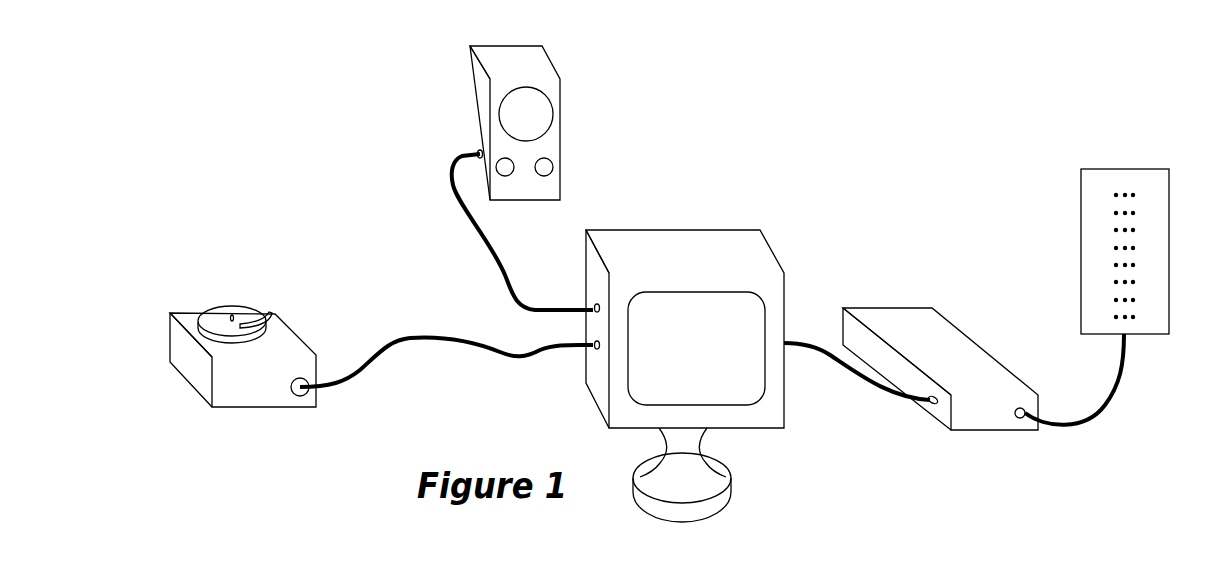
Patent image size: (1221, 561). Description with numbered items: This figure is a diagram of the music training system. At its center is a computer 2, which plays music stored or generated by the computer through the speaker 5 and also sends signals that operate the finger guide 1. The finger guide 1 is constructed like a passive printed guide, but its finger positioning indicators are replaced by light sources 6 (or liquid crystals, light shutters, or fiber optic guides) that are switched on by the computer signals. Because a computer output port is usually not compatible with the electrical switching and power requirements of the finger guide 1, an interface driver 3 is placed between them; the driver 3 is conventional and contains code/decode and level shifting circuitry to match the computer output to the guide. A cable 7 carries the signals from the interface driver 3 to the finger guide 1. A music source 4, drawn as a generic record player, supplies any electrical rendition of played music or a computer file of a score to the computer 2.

The finger guide 1 is at (1142, 279).
The computer 2 is at (787, 412).
The interface driver 3 is at (1003, 432).
The music source 4 is at (267, 407).
The speaker 5 is at (562, 109).
The light sources 6 is at (1135, 212).
The cable 7 is at (873, 390).